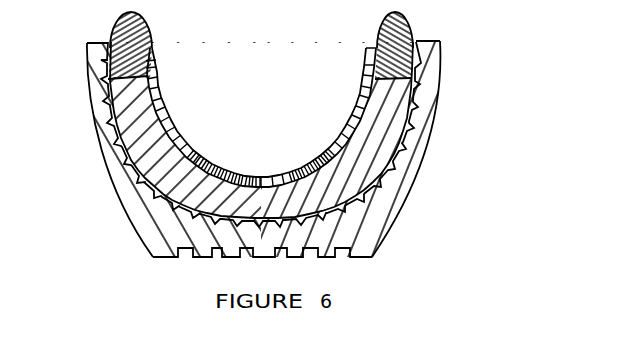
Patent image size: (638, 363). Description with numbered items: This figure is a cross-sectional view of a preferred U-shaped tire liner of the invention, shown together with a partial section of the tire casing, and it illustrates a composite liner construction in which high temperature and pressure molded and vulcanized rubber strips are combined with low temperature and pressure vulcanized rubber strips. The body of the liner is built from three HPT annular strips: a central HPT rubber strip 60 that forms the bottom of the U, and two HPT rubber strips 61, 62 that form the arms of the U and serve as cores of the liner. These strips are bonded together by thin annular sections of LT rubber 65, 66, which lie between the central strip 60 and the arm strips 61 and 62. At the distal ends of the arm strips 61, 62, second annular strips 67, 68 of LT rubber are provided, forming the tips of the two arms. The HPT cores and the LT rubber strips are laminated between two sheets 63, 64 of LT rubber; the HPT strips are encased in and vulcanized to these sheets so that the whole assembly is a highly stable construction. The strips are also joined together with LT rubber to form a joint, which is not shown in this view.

The HPT rubber strip 60 is at (166, 193).
The HPT rubber strip 61 is at (125, 110).
The HPT rubber strip 62 is at (382, 108).
The sheet of LT rubber 63 is at (136, 130).
The sheet of LT rubber 64 is at (145, 168).
The thin annular section of LT rubber 65 is at (342, 148).
The thin annular section of LT rubber 66 is at (176, 152).
The second annular strip of LT rubber 67 is at (120, 50).
The second annular strip of LT rubber 68 is at (392, 60).